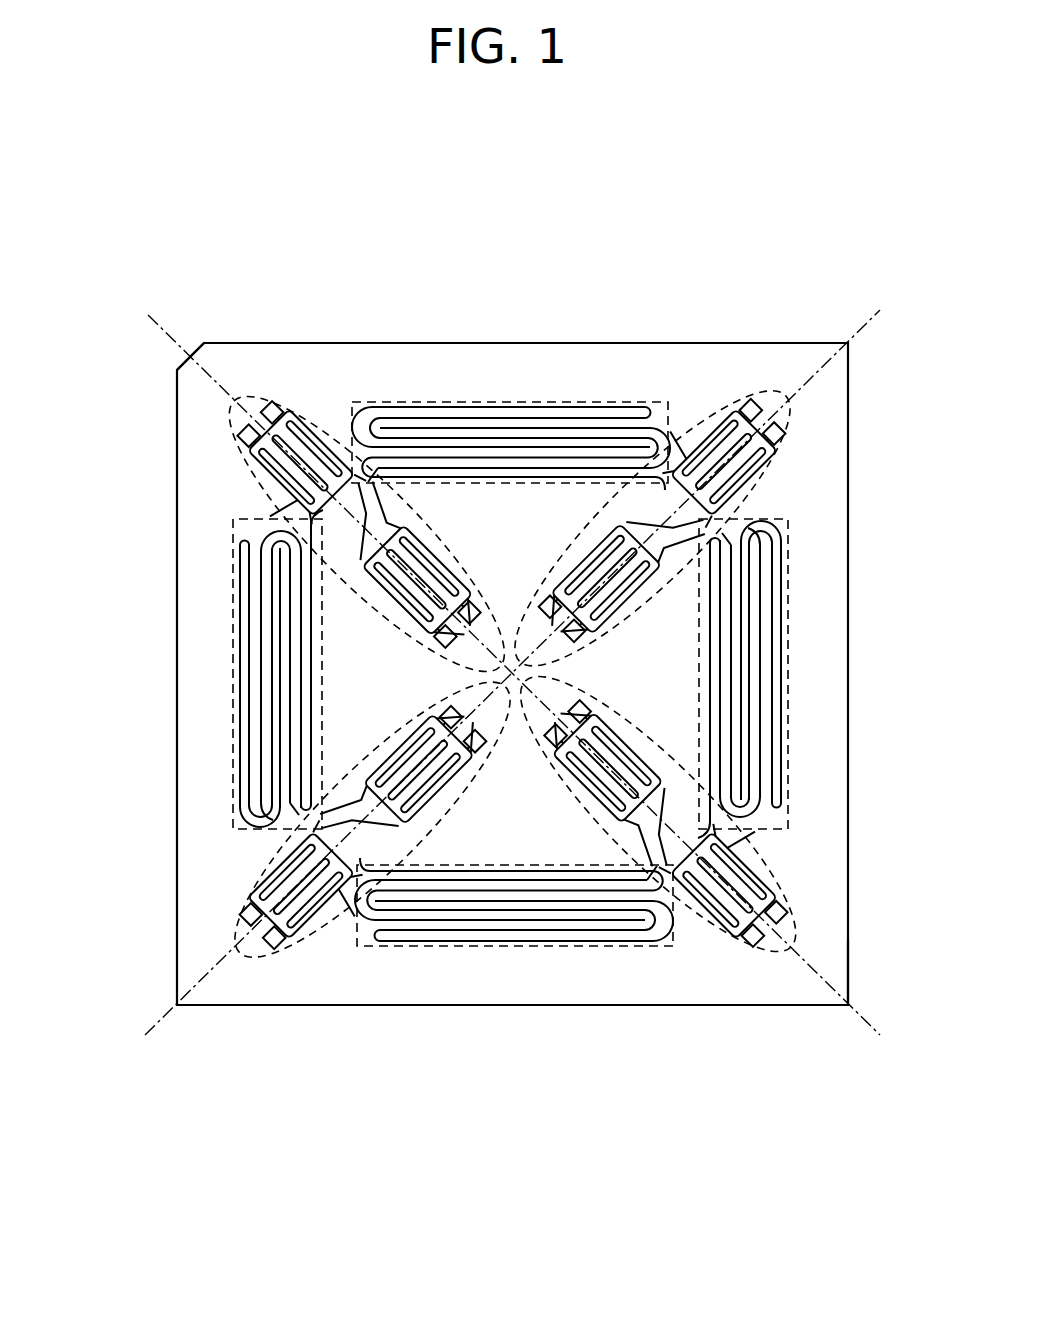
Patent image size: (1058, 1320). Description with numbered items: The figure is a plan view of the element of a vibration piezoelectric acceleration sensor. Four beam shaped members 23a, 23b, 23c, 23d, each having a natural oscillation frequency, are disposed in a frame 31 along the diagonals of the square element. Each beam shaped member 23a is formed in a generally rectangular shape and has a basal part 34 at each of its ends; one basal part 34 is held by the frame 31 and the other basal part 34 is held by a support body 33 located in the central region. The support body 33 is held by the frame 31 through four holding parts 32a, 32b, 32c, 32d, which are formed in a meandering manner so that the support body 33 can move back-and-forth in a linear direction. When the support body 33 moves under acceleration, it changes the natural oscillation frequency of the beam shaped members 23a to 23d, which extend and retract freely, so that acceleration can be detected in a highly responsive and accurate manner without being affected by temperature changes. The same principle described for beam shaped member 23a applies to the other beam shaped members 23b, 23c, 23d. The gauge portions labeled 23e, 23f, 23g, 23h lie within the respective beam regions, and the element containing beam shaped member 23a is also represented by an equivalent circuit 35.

The beam shaped member 23a is at (260, 963).
The beam shaped member 23b is at (770, 390).
The beam shaped member 23c is at (765, 956).
The beam shaped member 23d is at (246, 392).
The strain gauge resistor element 23e is at (372, 780).
The strain gauge resistor element 23f is at (763, 485).
The strain gauge resistor element 23g is at (640, 797).
The strain gauge resistor element 23h is at (303, 455).
The frame 31 is at (832, 712).
The holding part 32a is at (236, 777).
The holding part 32b is at (778, 513).
The holding part 32c is at (630, 950).
The holding part 32d is at (648, 405).
The support body 33 is at (490, 842).
The basal part 34 is at (248, 418).
The equivalent circuit 35 is at (850, 984).